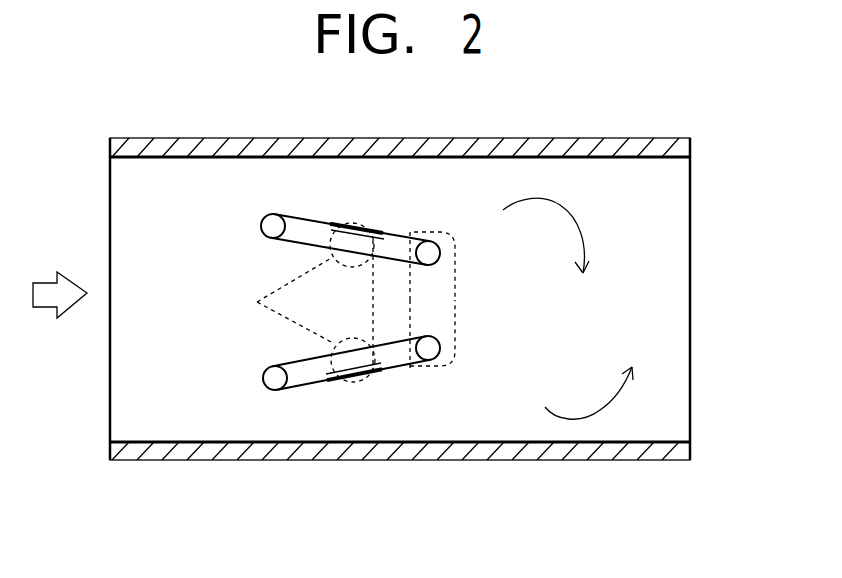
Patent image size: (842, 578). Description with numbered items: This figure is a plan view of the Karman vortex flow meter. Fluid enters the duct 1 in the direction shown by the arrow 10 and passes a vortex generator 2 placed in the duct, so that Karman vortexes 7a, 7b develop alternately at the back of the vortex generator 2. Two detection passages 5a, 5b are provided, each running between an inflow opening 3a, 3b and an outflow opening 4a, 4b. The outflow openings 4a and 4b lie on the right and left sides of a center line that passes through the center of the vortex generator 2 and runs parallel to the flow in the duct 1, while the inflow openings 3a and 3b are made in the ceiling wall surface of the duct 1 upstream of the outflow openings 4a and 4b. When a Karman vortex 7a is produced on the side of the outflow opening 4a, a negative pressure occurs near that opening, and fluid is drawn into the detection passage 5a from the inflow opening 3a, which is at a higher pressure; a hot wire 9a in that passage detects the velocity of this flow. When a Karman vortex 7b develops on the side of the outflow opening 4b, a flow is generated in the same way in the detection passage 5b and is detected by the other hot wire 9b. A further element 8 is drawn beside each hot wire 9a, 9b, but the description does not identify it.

The duct 1 is at (625, 461).
The vortex generator 2 is at (278, 283).
The inflow opening 3a is at (263, 378).
The inflow opening 3b is at (261, 226).
The outflow opening 4a is at (450, 366).
The outflow opening 4b is at (438, 232).
The detection passage 5a is at (302, 387).
The detection passage 5b is at (311, 220).
The Karman vortex 7a is at (560, 413).
The Karman vortex 7b is at (546, 200).
The pressing member 8 is at (368, 222).
The hot wire 9a is at (352, 355).
The hot wire 9b is at (352, 248).
The arrow 10 is at (50, 308).